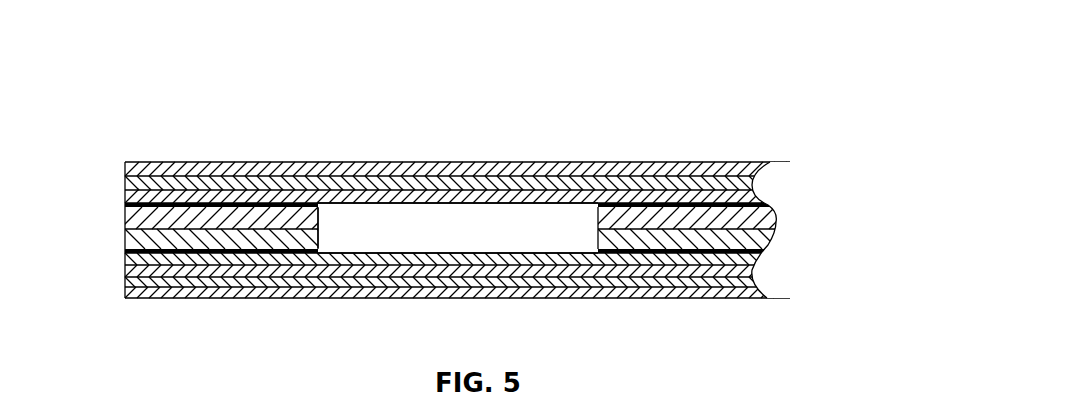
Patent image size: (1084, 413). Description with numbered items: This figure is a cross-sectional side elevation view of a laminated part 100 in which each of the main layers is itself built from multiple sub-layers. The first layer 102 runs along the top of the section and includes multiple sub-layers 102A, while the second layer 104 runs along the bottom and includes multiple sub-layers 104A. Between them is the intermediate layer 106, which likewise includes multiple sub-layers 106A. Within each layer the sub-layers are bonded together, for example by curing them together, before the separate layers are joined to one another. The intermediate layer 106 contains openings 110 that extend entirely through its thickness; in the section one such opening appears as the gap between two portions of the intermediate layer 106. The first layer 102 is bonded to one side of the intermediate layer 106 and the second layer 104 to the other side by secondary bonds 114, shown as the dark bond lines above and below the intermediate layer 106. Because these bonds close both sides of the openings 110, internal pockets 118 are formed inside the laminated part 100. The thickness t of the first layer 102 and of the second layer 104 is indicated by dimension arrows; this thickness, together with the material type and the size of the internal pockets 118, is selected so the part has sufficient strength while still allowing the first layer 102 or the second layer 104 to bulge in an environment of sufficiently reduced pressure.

The laminated part 100 is at (722, 72).
The first layer 102 is at (697, 160).
The sub-layers 102A is at (165, 169).
The second layer 104 is at (720, 300).
The sub-layers 104A is at (172, 292).
The intermediate layer 106 is at (769, 202).
The sub-layers 106A is at (760, 216).
The openings 110 is at (320, 213).
The secondary bond 114 is at (285, 201).
The internal pockets 118 is at (563, 220).
The thickness t is at (530, 228).